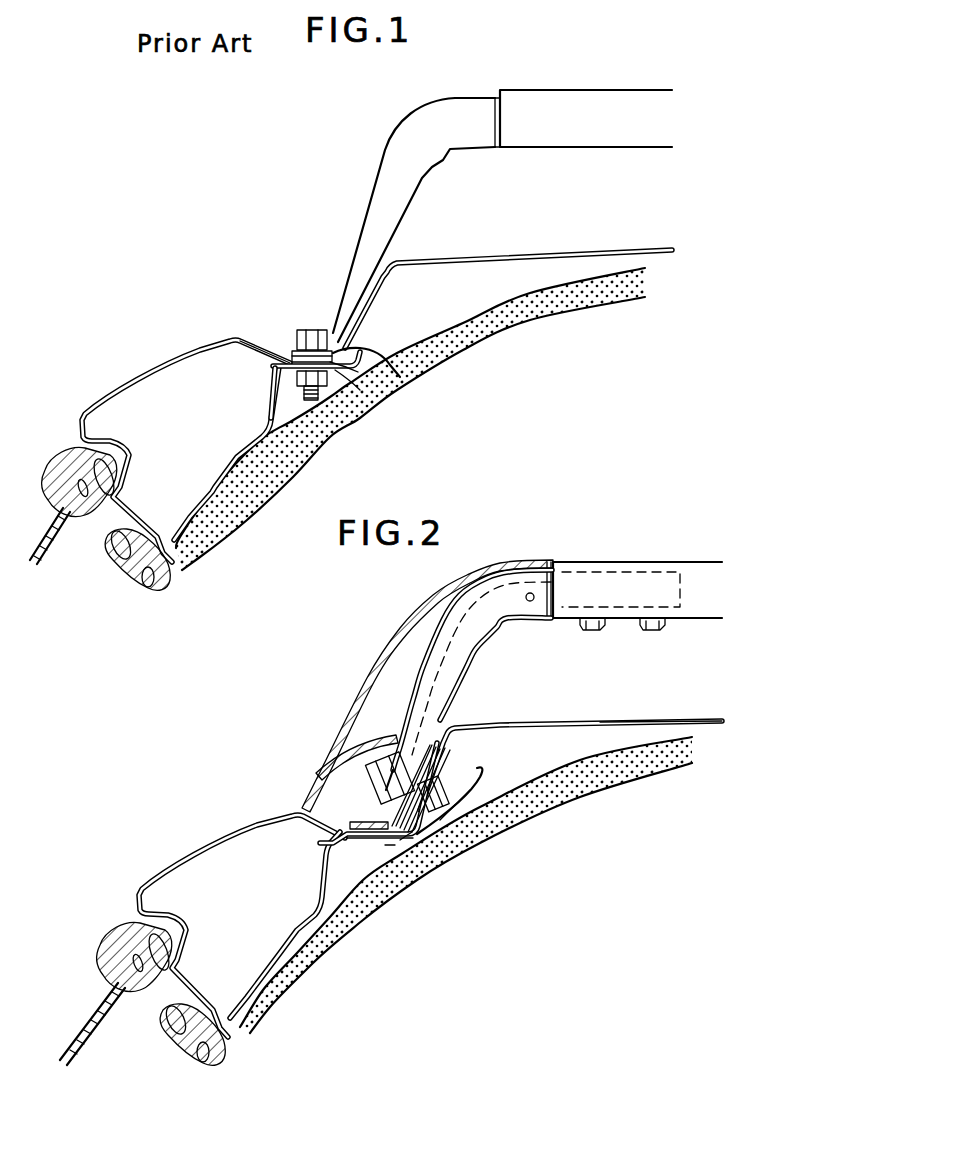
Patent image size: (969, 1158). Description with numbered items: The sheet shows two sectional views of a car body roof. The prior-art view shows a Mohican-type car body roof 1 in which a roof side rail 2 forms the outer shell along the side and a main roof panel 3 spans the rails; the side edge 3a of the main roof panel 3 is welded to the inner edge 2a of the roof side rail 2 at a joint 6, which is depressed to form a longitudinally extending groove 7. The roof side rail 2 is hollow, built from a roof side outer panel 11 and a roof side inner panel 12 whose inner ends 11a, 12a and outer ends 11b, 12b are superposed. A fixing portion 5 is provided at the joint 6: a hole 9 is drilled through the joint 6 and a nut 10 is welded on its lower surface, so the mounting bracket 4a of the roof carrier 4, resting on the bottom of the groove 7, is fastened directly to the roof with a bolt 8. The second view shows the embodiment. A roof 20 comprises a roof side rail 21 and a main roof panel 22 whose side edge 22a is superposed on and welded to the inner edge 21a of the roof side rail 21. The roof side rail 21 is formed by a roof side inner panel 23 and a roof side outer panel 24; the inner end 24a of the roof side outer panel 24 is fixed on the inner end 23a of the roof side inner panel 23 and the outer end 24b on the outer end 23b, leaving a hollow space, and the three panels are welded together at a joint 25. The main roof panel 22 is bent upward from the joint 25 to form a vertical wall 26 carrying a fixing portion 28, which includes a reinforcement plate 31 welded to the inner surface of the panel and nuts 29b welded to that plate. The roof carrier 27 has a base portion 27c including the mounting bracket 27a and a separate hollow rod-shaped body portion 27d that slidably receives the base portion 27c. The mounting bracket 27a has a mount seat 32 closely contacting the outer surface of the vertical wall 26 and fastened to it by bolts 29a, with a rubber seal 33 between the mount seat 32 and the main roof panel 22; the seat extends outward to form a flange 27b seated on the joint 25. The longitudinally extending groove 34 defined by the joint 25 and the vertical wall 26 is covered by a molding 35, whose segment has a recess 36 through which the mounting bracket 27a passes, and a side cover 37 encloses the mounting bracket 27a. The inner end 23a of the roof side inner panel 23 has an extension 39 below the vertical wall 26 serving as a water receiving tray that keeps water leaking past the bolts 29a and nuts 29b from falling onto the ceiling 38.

In FIG. 1, the car body roof 1 is at (527, 250).
In FIG. 1, the roof side rail 2 is at (160, 443).
In FIG. 1, the inner edge 2a is at (465, 370).
In FIG. 1, the main roof panel 3 is at (586, 250).
In FIG. 1, the side edge 3a is at (285, 338).
In FIG. 1, the roof carrier 4 is at (540, 88).
In FIG. 1, the mounting bracket 4a is at (348, 270).
In FIG. 1, the fixing portion 5 is at (305, 328).
In FIG. 1, the joint 6 is at (348, 378).
In FIG. 1, the longitudinally extending groove 7 is at (268, 340).
In FIG. 1, the bolt 8 is at (310, 388).
In FIG. 1, the hole 9 is at (316, 351).
In FIG. 1, the nut 10 is at (298, 400).
In FIG. 1, the roof side outer panel 11 is at (175, 355).
In FIG. 1, the inner end 11a is at (358, 366).
In FIG. 1, the outer end 11b is at (125, 572).
In FIG. 1, the roof side inner panel 12 is at (252, 432).
In FIG. 1, the inner end 12a is at (355, 387).
In FIG. 1, the outer end 12b is at (166, 578).
In FIG. 2, the roof 20 is at (565, 725).
In FIG. 2, the roof side rail 21 is at (202, 958).
In FIG. 2, the inner edge 21a is at (510, 908).
In FIG. 2, the main roof panel 22 is at (630, 720).
In FIG. 2, the side edge 22a is at (300, 812).
In FIG. 2, the roof side inner panel 23 is at (290, 920).
In FIG. 2, the inner end 23a is at (398, 847).
In FIG. 2, the outer end 23b is at (213, 1053).
In FIG. 2, the roof side outer panel 24 is at (193, 855).
In FIG. 2, the inner end 24a is at (405, 836).
In FIG. 2, the outer end 24b is at (185, 1040).
In FIG. 2, the joint 25 is at (358, 848).
In FIG. 2, the vertical wall 26 is at (430, 782).
In FIG. 2, the roof carrier 27 is at (600, 560).
In FIG. 2, the mounting bracket 27a is at (415, 690).
In FIG. 2, the flange 27b is at (362, 785).
In FIG. 2, the base portion 27c is at (507, 597).
In FIG. 2, the body portion 27d is at (703, 575).
In FIG. 2, the fixing portion 28 is at (435, 777).
In FIG. 2, the bolts 29a is at (390, 745).
In FIG. 2, the nuts 29b is at (425, 820).
In FIG. 2, the reinforcement plate 31 is at (460, 812).
In FIG. 2, the mount seat 32 is at (420, 760).
In FIG. 2, the rubber seal 33 is at (430, 760).
In FIG. 2, the longitudinally extending groove 34 is at (375, 847).
In FIG. 2, the molding 35 is at (305, 772).
In FIG. 2, the recess 36 is at (378, 760).
In FIG. 2, the side cover 37 is at (390, 622).
In FIG. 2, the ceiling 38 is at (560, 790).
In FIG. 2, the extension 39 is at (470, 802).